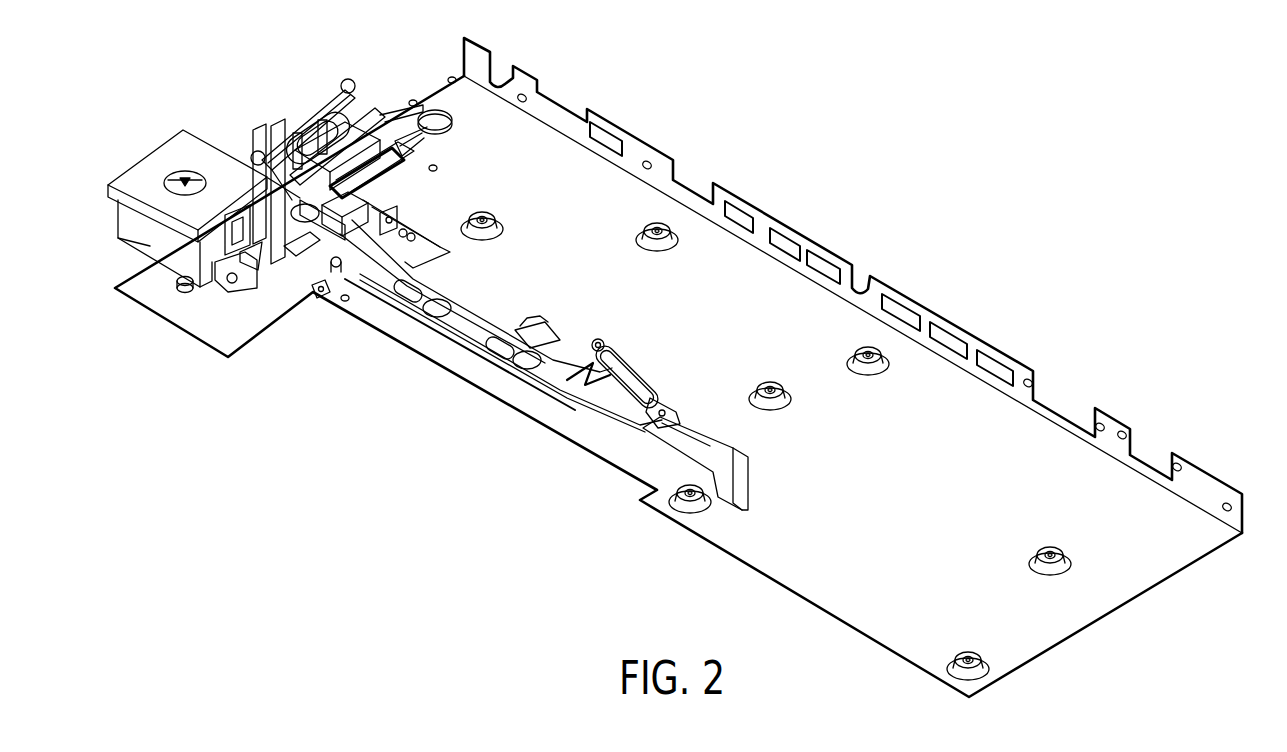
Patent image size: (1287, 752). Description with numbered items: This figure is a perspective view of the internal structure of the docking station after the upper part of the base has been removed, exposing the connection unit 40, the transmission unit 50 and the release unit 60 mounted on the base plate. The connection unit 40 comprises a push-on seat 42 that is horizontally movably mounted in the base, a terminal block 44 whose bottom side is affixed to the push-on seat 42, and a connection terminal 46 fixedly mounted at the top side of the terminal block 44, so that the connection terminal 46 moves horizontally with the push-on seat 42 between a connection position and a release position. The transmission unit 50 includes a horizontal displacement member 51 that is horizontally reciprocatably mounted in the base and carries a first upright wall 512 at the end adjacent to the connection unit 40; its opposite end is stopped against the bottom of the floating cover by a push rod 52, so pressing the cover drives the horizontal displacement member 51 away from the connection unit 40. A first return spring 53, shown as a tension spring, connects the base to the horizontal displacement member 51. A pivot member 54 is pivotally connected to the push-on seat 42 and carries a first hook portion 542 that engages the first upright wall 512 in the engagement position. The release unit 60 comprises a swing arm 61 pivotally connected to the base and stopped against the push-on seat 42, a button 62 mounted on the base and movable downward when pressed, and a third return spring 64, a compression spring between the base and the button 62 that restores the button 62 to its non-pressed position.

The connection unit 40 is at (461, 215).
The push-on seat 42 is at (297, 242).
The terminal block 44 is at (384, 182).
The connection terminal 46 is at (313, 113).
The transmission unit 50 is at (566, 330).
The horizontal displacement member 51 is at (501, 346).
The first upright wall 512 is at (362, 230).
The push rod 52 is at (630, 346).
The first return spring 53 is at (505, 353).
The pivot member 54 is at (332, 306).
The first hook portion 542 is at (332, 292).
The release unit 60 is at (166, 210).
The swing arm 61 is at (417, 150).
The button 62 is at (135, 232).
The third return spring 64 is at (178, 280).